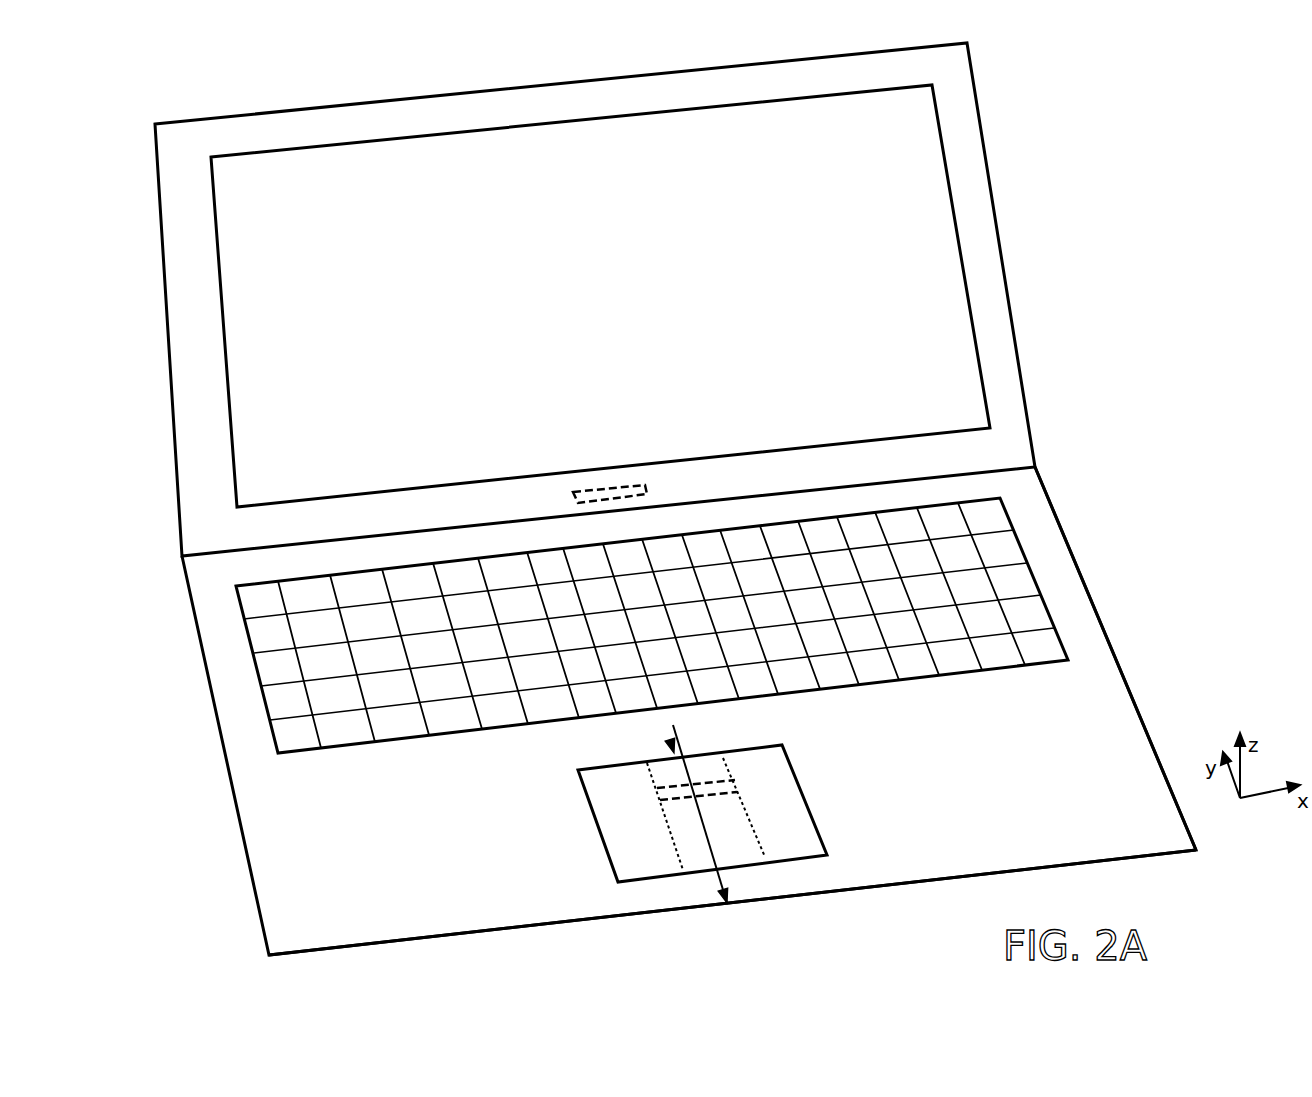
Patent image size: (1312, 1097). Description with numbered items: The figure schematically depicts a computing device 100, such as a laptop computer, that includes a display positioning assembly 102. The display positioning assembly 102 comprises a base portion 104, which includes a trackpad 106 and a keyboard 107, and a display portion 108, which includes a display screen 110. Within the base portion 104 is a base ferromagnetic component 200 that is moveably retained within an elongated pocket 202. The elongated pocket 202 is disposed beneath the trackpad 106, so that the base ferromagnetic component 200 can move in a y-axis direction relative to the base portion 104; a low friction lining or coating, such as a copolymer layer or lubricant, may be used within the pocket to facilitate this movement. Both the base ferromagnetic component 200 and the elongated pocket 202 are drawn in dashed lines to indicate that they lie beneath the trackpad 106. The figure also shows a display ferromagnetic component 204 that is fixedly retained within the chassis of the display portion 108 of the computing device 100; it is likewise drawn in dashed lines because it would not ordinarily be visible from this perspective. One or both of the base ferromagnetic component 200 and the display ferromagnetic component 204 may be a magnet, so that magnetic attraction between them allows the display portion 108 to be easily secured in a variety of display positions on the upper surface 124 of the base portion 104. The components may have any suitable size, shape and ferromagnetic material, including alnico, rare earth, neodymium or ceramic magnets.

The computing device 100 is at (155, 86).
The display positioning assembly 102 is at (840, 731).
The base portion 104 is at (218, 752).
The trackpad 106 is at (595, 823).
The keyboard 107 is at (295, 755).
The display portion 108 is at (989, 163).
The display screen 110 is at (481, 122).
The upper surface 124 is at (1102, 672).
The base ferromagnetic component 200 is at (735, 782).
The elongated pocket 202 is at (665, 818).
The display ferromagnetic component 204 is at (648, 488).